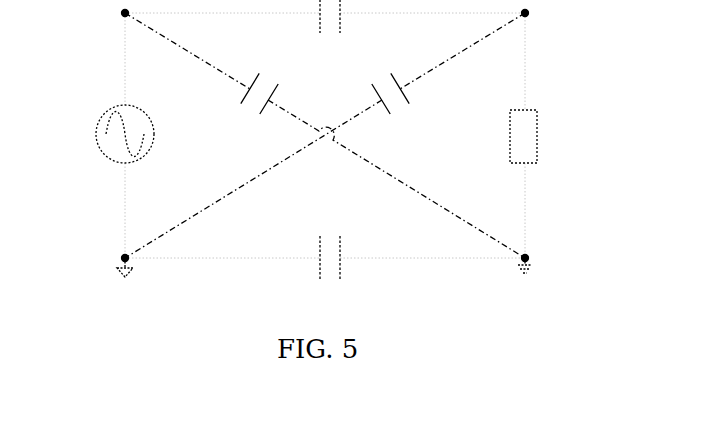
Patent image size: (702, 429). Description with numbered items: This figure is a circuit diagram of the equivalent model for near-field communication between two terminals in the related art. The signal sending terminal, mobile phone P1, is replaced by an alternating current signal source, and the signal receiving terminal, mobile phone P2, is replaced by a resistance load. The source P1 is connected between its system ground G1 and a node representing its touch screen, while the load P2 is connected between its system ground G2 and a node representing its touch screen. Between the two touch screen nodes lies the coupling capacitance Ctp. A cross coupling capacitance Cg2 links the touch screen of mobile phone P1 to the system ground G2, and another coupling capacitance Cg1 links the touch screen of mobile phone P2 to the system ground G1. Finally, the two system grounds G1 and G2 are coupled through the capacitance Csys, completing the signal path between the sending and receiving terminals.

The mobile phone P1 is at (106, 135).
The mobile phone P2 is at (541, 135).
The system ground G1 is at (110, 261).
The system ground G2 is at (542, 259).
The coupling capacitance Ctp is at (325, 31).
The coupling capacitance Cg1 is at (325, 135).
The coupling capacitance Cg2 is at (325, 135).
The coupling capacitance Csys is at (325, 244).